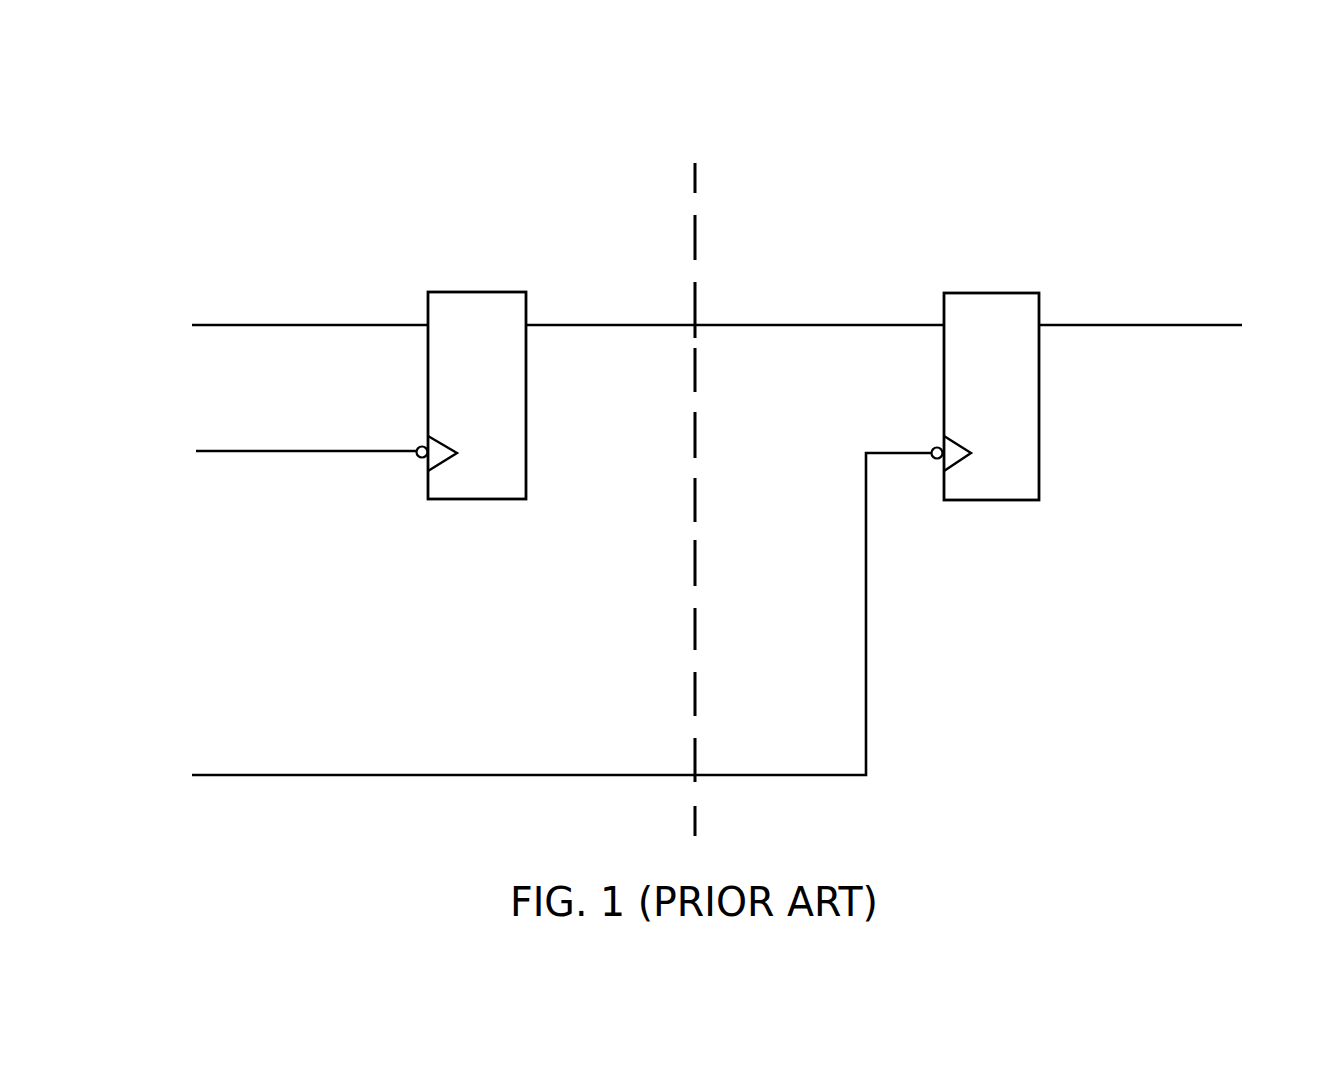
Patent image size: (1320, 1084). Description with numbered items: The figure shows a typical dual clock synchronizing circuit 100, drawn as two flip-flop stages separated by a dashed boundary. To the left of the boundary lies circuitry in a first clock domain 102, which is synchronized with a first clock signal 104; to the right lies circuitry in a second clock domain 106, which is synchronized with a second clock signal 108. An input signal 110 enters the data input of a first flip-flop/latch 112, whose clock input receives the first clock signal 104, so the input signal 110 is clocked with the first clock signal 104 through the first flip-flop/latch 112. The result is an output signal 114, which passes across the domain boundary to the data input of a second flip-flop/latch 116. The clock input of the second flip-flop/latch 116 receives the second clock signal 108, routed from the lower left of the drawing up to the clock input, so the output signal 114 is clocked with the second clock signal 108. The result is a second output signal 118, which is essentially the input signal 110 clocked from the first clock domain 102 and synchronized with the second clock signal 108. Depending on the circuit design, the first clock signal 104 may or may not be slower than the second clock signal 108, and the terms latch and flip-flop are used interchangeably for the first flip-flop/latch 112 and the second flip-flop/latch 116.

The dual clock synchronizing circuit 100 is at (283, 131).
The first clock domain 102 is at (675, 215).
The first clock signal 104 is at (246, 451).
The second clock domain 106 is at (712, 216).
The second clock signal 108 is at (246, 775).
The input signal 110 is at (247, 325).
The first flip-flop/latch 112 is at (527, 465).
The output signal 114 is at (793, 325).
The second flip-flop/latch 116 is at (1043, 466).
The second output signal 118 is at (1142, 325).